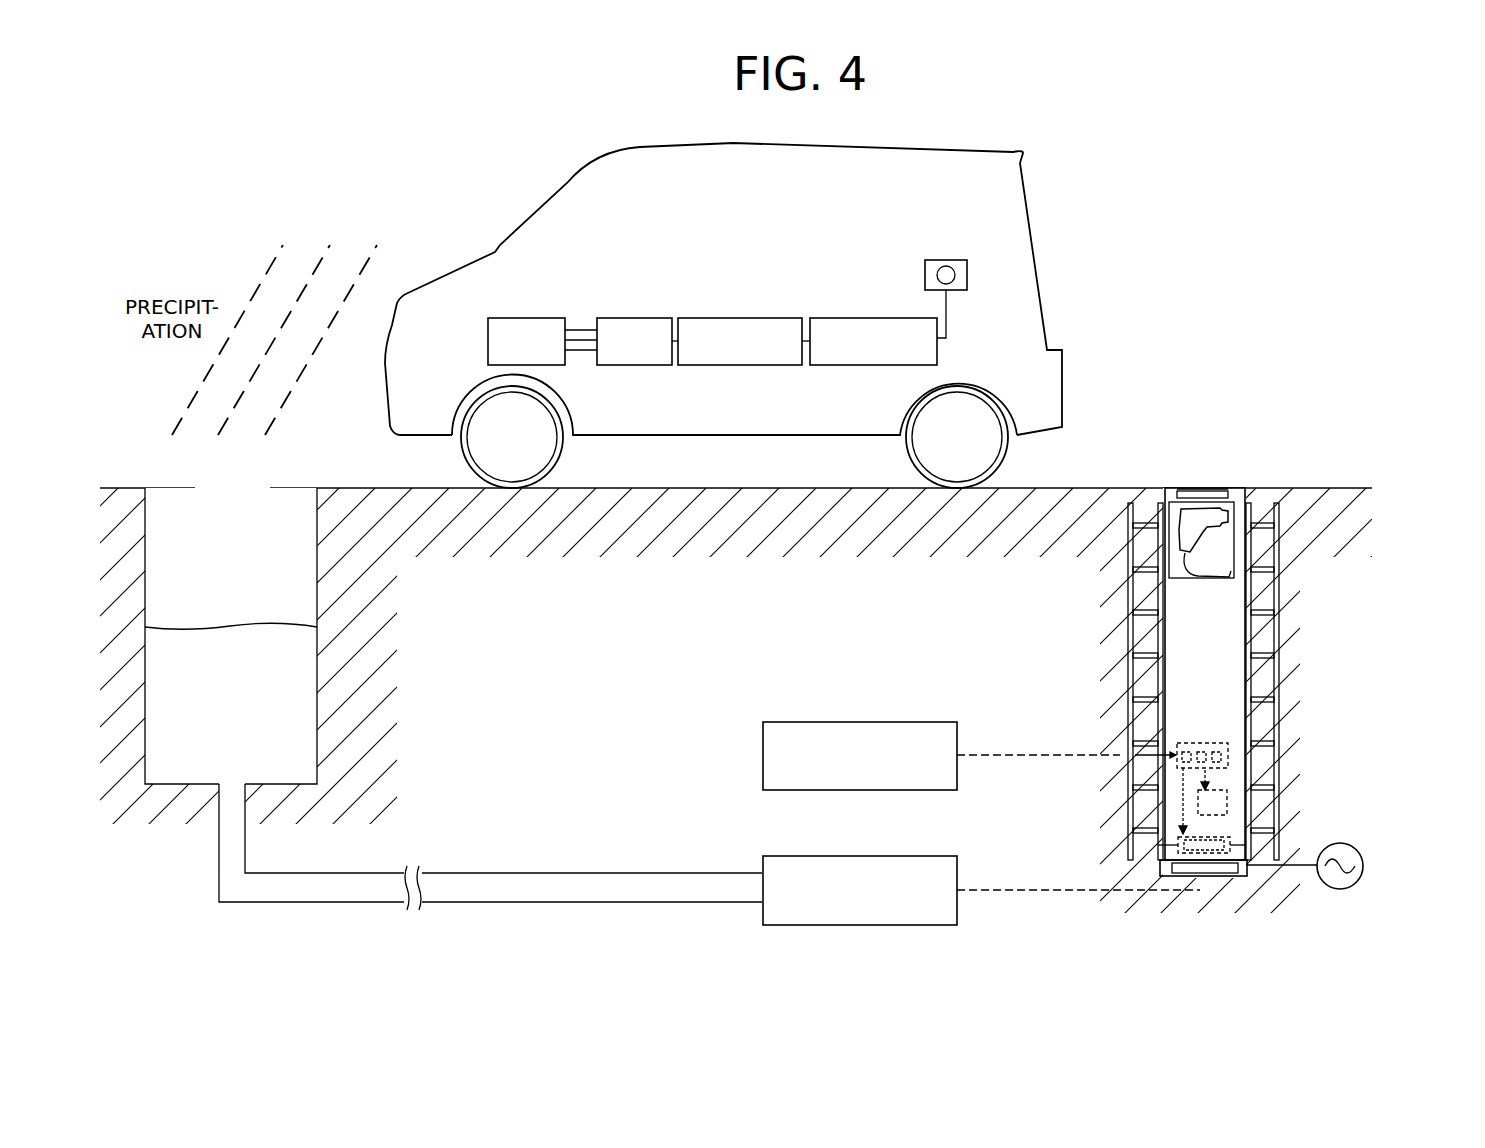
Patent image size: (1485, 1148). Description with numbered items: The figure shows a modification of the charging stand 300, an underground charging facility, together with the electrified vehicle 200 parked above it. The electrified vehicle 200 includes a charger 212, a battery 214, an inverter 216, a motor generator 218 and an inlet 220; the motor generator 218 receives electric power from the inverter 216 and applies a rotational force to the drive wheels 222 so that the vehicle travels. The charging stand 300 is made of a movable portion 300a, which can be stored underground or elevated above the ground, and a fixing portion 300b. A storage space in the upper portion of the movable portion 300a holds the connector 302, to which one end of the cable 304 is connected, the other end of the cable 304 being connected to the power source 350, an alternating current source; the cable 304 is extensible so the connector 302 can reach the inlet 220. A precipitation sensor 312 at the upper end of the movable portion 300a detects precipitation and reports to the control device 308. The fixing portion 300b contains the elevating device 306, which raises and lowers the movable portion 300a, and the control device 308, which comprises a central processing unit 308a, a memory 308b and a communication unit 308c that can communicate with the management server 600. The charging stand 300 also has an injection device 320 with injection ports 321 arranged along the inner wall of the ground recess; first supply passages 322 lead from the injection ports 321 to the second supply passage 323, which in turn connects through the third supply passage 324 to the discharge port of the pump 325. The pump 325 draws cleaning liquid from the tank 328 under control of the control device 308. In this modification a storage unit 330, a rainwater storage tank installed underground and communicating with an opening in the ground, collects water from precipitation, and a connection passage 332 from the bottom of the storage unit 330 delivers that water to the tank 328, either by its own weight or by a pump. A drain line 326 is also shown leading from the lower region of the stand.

The electrified vehicle 200 is at (723, 305).
The charger 212 is at (876, 318).
The battery 214 is at (742, 318).
The inverter 216 is at (637, 318).
The motor generator 218 is at (527, 318).
The inlet 220 is at (946, 260).
The drive wheels 222 is at (562, 422).
The charging stand 300 is at (1222, 676).
The movable portion 300a is at (1230, 490).
The fixing portion 300b is at (1205, 878).
The connector 302 is at (1212, 528).
The cable 304 is at (1192, 580).
The elevating device 306 is at (1228, 800).
The control device 308 is at (1202, 754).
The central processing unit 308a is at (1230, 745).
The memory 308b is at (1180, 746).
The communication unit 308c is at (1180, 765).
The precipitation sensor 312 is at (1198, 490).
The injection device 320 is at (1203, 660).
The injection ports 321 is at (1230, 578).
The first supply passages 322 is at (1152, 520).
The second supply passage 323 is at (1150, 570).
The third supply passage 324 is at (1236, 848).
The pump 325 is at (1232, 838).
The drain pipe 326 is at (1150, 850).
The tank 328 is at (900, 857).
The storage unit 330 is at (160, 784).
The connection passage 332 is at (525, 873).
The power source 350 is at (1364, 867).
The management server 600 is at (900, 722).